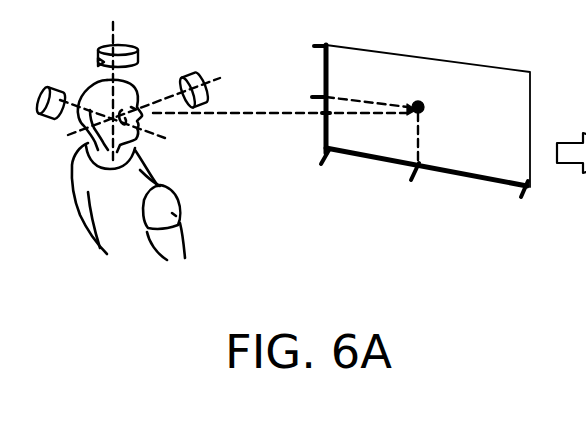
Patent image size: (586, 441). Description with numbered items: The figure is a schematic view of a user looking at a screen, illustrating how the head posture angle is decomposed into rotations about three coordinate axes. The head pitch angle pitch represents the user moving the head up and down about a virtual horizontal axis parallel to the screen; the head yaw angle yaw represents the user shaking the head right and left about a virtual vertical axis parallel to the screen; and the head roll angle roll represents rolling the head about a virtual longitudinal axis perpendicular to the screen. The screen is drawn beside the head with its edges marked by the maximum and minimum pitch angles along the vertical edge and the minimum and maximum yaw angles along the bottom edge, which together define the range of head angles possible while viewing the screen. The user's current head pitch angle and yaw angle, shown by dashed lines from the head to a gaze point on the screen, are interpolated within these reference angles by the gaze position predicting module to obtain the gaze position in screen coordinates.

The head yaw angle yaw is at (130, 41).
The head pitch angle pitch is at (56, 89).
The head roll angle roll is at (198, 77).